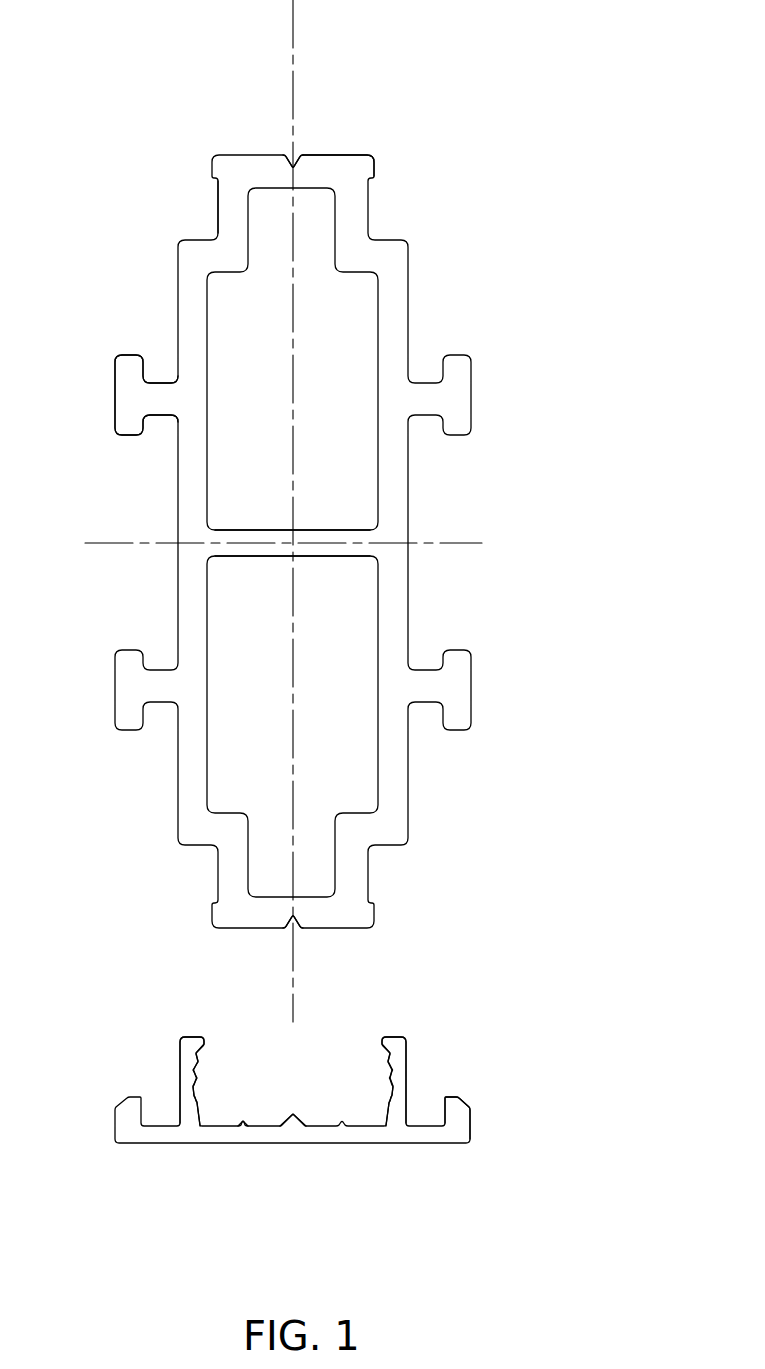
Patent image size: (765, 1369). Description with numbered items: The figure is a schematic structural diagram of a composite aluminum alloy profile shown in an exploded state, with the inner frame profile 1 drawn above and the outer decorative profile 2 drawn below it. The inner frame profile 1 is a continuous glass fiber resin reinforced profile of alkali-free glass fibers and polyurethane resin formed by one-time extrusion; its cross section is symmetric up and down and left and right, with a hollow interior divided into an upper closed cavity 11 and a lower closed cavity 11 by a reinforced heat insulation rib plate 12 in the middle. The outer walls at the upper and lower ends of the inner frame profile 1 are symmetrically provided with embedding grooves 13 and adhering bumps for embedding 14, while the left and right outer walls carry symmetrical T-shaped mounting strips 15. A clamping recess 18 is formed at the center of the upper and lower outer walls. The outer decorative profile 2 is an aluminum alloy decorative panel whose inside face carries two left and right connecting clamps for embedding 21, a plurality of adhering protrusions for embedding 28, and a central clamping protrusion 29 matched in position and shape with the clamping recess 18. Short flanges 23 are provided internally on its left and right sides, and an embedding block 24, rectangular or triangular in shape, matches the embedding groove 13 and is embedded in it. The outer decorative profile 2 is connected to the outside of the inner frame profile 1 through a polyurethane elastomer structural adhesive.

The inner frame profile 1 is at (390, 597).
The closed cavity 11 is at (343, 358).
The reinforced heat insulation rib plate 12 is at (343, 549).
The embedding groove 13 is at (217, 207).
The adhering bump for embedding 14 is at (360, 168).
The T-shaped mounting strip 15 is at (130, 397).
The clamping recess 18 is at (292, 166).
The outer decorative profile 2 is at (192, 1135).
The connecting clamp for embedding 21 is at (399, 1067).
The short flange 23 is at (457, 1118).
The embedding block 24 is at (196, 1046).
The adhering protrusion for embedding 28 is at (242, 1123).
The clamping protrusion 29 is at (293, 1114).